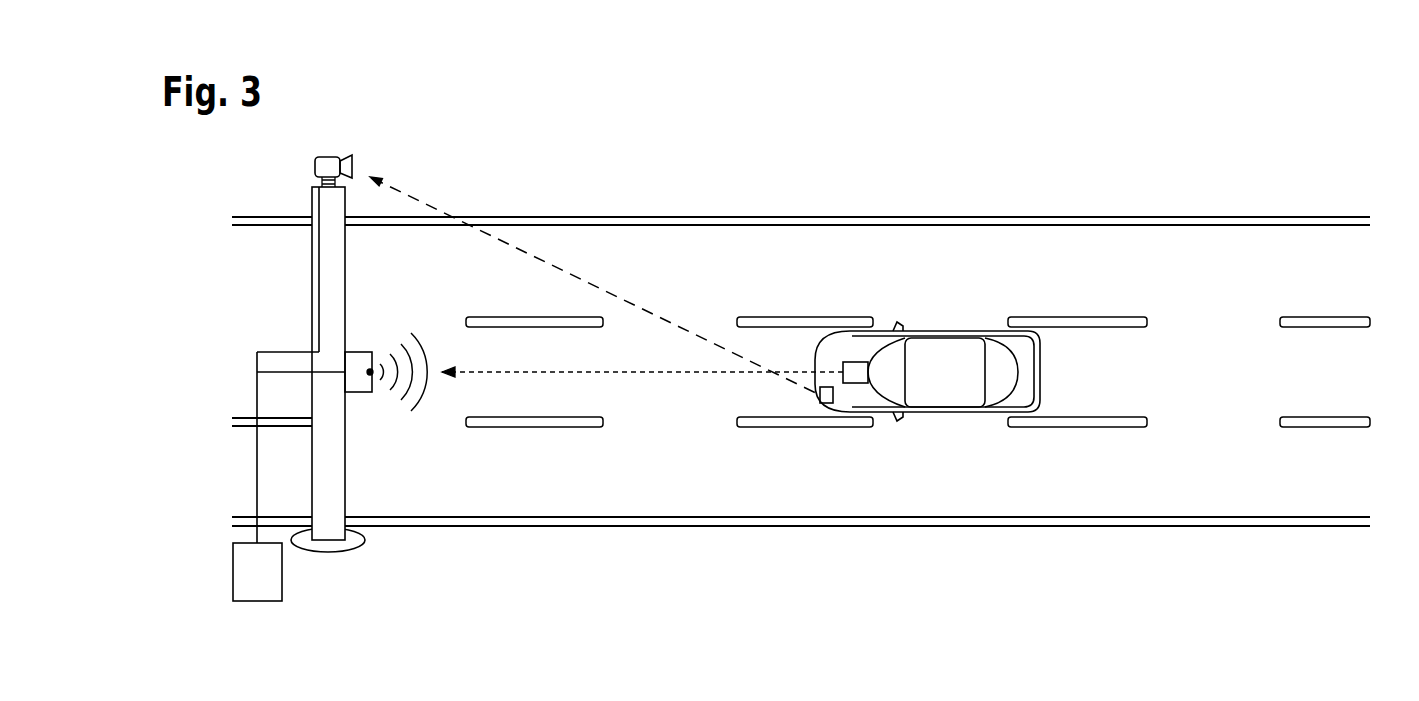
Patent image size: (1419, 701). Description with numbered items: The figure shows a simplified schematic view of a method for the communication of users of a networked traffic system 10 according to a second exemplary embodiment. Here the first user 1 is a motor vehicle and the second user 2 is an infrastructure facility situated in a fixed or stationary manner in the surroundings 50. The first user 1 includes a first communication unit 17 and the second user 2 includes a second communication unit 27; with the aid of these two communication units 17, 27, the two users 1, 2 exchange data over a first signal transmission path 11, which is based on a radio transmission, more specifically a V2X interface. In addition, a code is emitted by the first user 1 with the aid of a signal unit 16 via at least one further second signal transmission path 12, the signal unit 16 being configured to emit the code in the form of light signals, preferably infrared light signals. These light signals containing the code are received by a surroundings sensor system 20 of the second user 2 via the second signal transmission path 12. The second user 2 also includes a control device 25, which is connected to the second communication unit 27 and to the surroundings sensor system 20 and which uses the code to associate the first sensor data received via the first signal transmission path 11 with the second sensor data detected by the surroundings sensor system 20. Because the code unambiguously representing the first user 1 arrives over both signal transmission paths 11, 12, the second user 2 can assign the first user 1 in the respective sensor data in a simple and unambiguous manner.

The first user 1 is at (996, 320).
The second user 2 is at (342, 144).
The networked traffic system 10 is at (1108, 147).
The first signal transmission path 11 is at (617, 376).
The second signal transmission path 12 is at (540, 249).
The signal unit 16 is at (838, 405).
The first communication unit 17 is at (856, 387).
The surroundings sensor system 20 is at (315, 164).
The control device 25 is at (250, 603).
The second communication unit 27 is at (371, 375).
The surroundings 50 is at (839, 261).